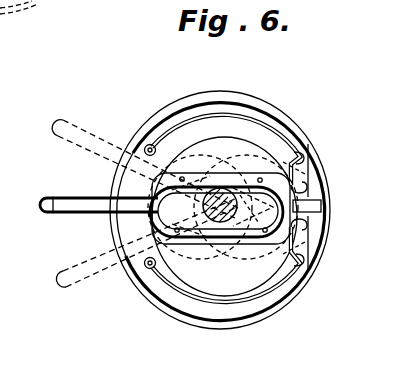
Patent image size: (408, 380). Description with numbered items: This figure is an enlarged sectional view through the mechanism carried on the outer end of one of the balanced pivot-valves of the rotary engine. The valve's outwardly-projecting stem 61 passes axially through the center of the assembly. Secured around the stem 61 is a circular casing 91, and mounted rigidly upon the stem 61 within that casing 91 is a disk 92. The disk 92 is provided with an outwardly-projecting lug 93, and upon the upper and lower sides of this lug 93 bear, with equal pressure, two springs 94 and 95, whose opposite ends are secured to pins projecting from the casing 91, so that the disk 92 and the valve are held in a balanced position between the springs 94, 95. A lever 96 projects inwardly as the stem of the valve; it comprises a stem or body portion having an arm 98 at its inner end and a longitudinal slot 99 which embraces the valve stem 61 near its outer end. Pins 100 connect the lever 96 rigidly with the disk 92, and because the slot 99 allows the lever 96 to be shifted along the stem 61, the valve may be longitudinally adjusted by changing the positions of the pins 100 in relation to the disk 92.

The stem 61 is at (221, 222).
The circular casing 91 is at (263, 100).
The disk 92 is at (246, 157).
The lug 93 is at (318, 210).
The spring 94 is at (277, 134).
The spring 95 is at (247, 297).
The lever 96 is at (88, 198).
The arm 98 is at (46, 212).
The longitudinal slot 99 is at (257, 222).
The pin 100 is at (181, 177).